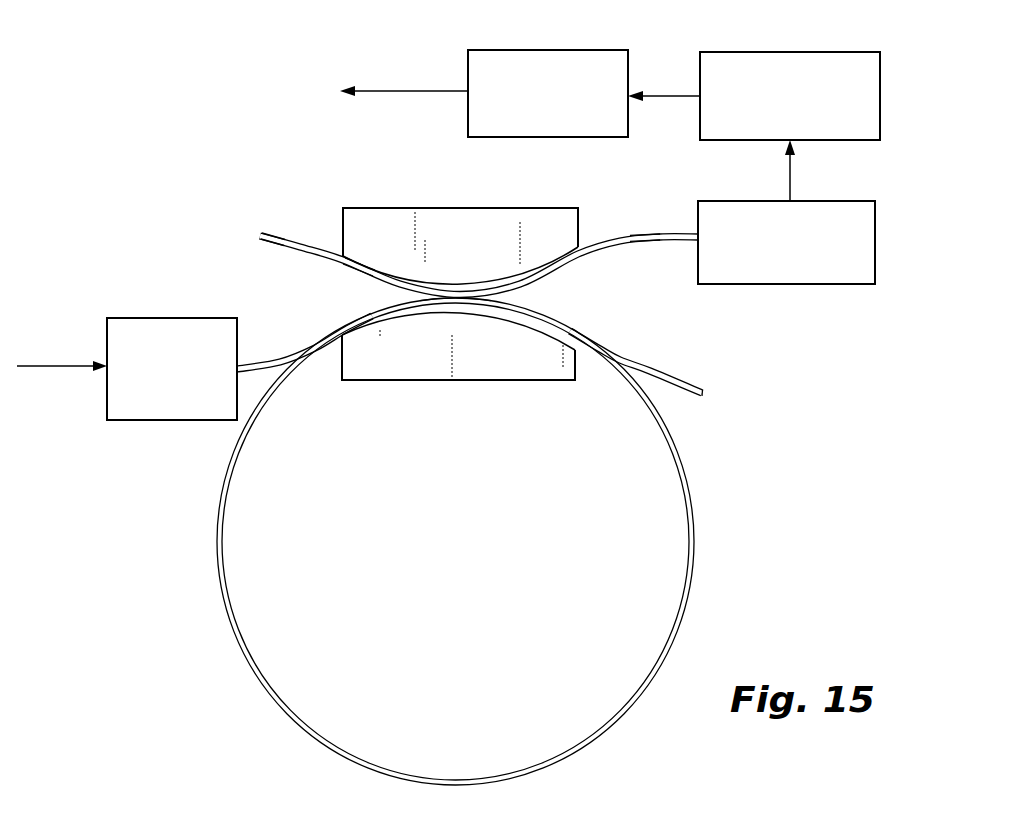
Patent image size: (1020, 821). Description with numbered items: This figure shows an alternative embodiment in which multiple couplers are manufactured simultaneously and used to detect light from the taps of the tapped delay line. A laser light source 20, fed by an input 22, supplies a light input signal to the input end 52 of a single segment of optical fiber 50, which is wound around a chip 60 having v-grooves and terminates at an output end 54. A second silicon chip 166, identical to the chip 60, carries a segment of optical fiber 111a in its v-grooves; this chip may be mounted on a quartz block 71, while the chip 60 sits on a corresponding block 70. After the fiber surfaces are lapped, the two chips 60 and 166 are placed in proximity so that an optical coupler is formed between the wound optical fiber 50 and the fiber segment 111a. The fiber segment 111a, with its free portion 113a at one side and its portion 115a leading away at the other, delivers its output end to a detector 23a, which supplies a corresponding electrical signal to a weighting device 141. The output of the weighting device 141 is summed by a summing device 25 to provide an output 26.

The laser light source 20 is at (157, 318).
The input 22 is at (58, 364).
The summing device 25 is at (543, 50).
The output 26 is at (388, 95).
The weighting device 141 is at (778, 53).
The detector 23a is at (780, 275).
The quartz block 71 is at (495, 214).
The lower coupler block 70 is at (432, 370).
The second silicon chip 166 is at (372, 262).
The fiber end 113a is at (293, 245).
The fiber portion 115a is at (632, 220).
The segment of optical fiber 111a is at (602, 257).
The input end 52 is at (267, 360).
The output end 54 is at (673, 380).
The chip 60 is at (523, 320).
The optical fiber 50 is at (692, 527).